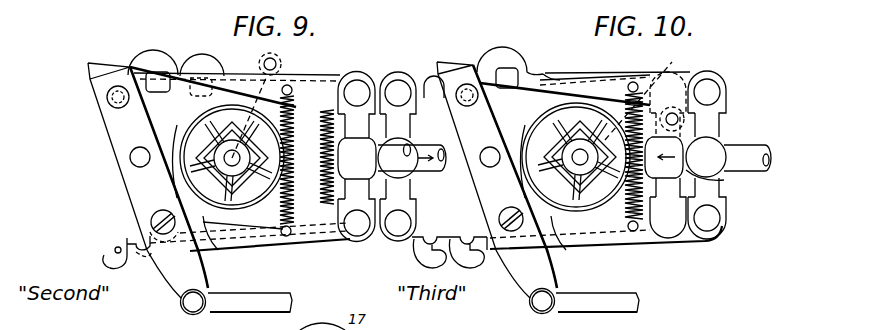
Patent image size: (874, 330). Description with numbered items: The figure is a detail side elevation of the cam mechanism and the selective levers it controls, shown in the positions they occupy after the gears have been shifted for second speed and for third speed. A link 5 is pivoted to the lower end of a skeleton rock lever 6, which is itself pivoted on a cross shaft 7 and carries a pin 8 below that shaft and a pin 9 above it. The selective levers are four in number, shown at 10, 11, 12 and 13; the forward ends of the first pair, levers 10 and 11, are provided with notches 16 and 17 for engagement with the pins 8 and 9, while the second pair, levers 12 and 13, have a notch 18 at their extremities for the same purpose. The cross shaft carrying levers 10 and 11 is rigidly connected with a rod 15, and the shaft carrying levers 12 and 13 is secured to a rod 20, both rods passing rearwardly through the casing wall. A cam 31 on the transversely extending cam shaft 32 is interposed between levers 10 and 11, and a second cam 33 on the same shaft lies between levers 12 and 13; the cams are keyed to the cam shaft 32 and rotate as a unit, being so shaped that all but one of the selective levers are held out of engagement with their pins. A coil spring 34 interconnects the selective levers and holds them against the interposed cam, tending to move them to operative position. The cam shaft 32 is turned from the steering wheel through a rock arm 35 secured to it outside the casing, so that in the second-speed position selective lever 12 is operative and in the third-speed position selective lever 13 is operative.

In FIG. 9, the link 5 is at (292, 297).
In FIG. 10, the link 5 is at (638, 297).
In FIG. 9, the skeleton rock lever 6 is at (148, 189).
In FIG. 10, the skeleton rock lever 6 is at (497, 188).
In FIG. 9, the cross shaft 7 is at (130, 157).
In FIG. 10, the cross shaft 7 is at (490, 167).
In FIG. 9, the pin 8 is at (151, 218).
In FIG. 10, the pin 8 is at (499, 219).
In FIG. 9, the pin 9 is at (107, 97).
In FIG. 10, the pin 9 is at (468, 100).
In FIG. 9, the selective lever 10 is at (263, 240).
In FIG. 10, the selective lever 10 is at (620, 242).
In FIG. 9, the selective lever 11 is at (150, 56).
In FIG. 10, the selective lever 11 is at (573, 78).
In FIG. 9, the selective lever 12 is at (219, 243).
In FIG. 10, the selective lever 12 is at (568, 244).
In FIG. 9, the selective lever 13 is at (212, 60).
In FIG. 10, the selective lever 13 is at (431, 84).
In FIG. 9, the rod 15 is at (410, 152).
In FIG. 10, the rod 15 is at (745, 148).
In FIG. 9, the notch 16 is at (110, 250).
In FIG. 10, the notch 16 is at (472, 257).
In FIG. 9, the notch 17 is at (160, 74).
In FIG. 10, the notch 17 is at (512, 78).
In FIG. 10, the notch 18 is at (422, 252).
In FIG. 9, the rod 20 is at (426, 170).
In FIG. 10, the rod 20 is at (716, 182).
In FIG. 9, the cam 31 is at (200, 117).
In FIG. 10, the cam 31 is at (555, 136).
In FIG. 9, the cam shaft 32 is at (240, 158).
In FIG. 10, the cam shaft 32 is at (588, 150).
In FIG. 9, the second cam 33 is at (178, 152).
In FIG. 10, the second cam 33 is at (545, 124).
In FIG. 9, the coil spring 34 is at (295, 110).
In FIG. 10, the coil spring 34 is at (628, 102).
In FIG. 9, the rock arm 35 is at (282, 65).
In FIG. 10, the rock arm 35 is at (660, 110).